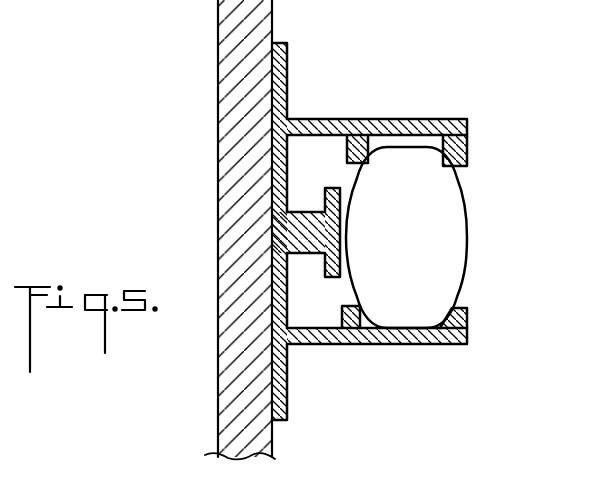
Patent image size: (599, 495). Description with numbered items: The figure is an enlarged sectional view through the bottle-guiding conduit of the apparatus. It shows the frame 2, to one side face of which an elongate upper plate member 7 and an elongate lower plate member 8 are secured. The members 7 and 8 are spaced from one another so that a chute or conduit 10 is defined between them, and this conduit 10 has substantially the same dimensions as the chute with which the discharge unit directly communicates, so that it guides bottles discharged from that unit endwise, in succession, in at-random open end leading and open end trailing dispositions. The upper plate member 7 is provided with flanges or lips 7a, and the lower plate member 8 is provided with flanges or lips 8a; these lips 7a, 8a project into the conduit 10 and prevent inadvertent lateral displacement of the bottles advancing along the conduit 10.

The frame 2 is at (228, 131).
The elongate upper plate member 7 is at (400, 119).
The flanges or lips 7a is at (347, 158).
The elongate lower plate member 8 is at (405, 345).
The flanges or lips 8a is at (342, 312).
The chute or conduit 10 is at (467, 142).